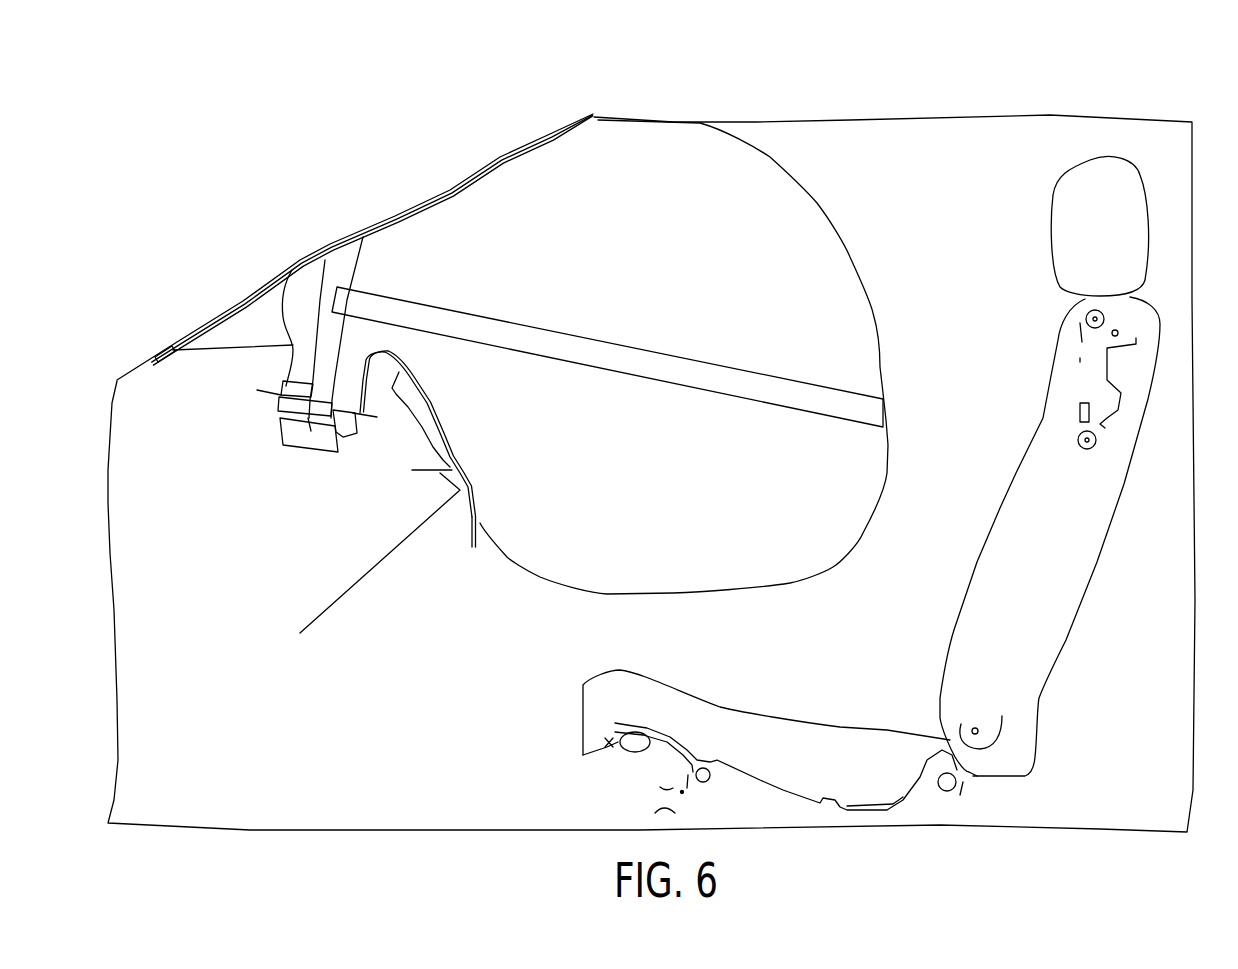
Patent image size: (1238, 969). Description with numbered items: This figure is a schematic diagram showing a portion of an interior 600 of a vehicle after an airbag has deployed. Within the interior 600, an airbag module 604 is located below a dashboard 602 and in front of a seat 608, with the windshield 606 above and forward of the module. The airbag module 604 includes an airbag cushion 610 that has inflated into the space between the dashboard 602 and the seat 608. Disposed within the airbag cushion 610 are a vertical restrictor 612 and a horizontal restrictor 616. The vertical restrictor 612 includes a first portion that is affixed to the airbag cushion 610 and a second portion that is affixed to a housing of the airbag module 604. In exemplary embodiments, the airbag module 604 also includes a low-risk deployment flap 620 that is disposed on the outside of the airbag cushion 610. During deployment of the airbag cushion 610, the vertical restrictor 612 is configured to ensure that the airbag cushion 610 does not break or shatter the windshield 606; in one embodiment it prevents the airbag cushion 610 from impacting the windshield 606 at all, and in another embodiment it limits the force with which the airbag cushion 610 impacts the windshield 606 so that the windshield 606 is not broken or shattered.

The interior 600 is at (836, 99).
The dashboard 602 is at (472, 463).
The airbag module 604 is at (286, 448).
The windshield 606 is at (395, 237).
The seat 608 is at (1014, 475).
The airbag cushion 610 is at (833, 209).
The vertical restrictor 612 is at (283, 380).
The horizontal restrictor 616 is at (860, 410).
The low-risk deployment (LRD) flap 620 is at (470, 537).